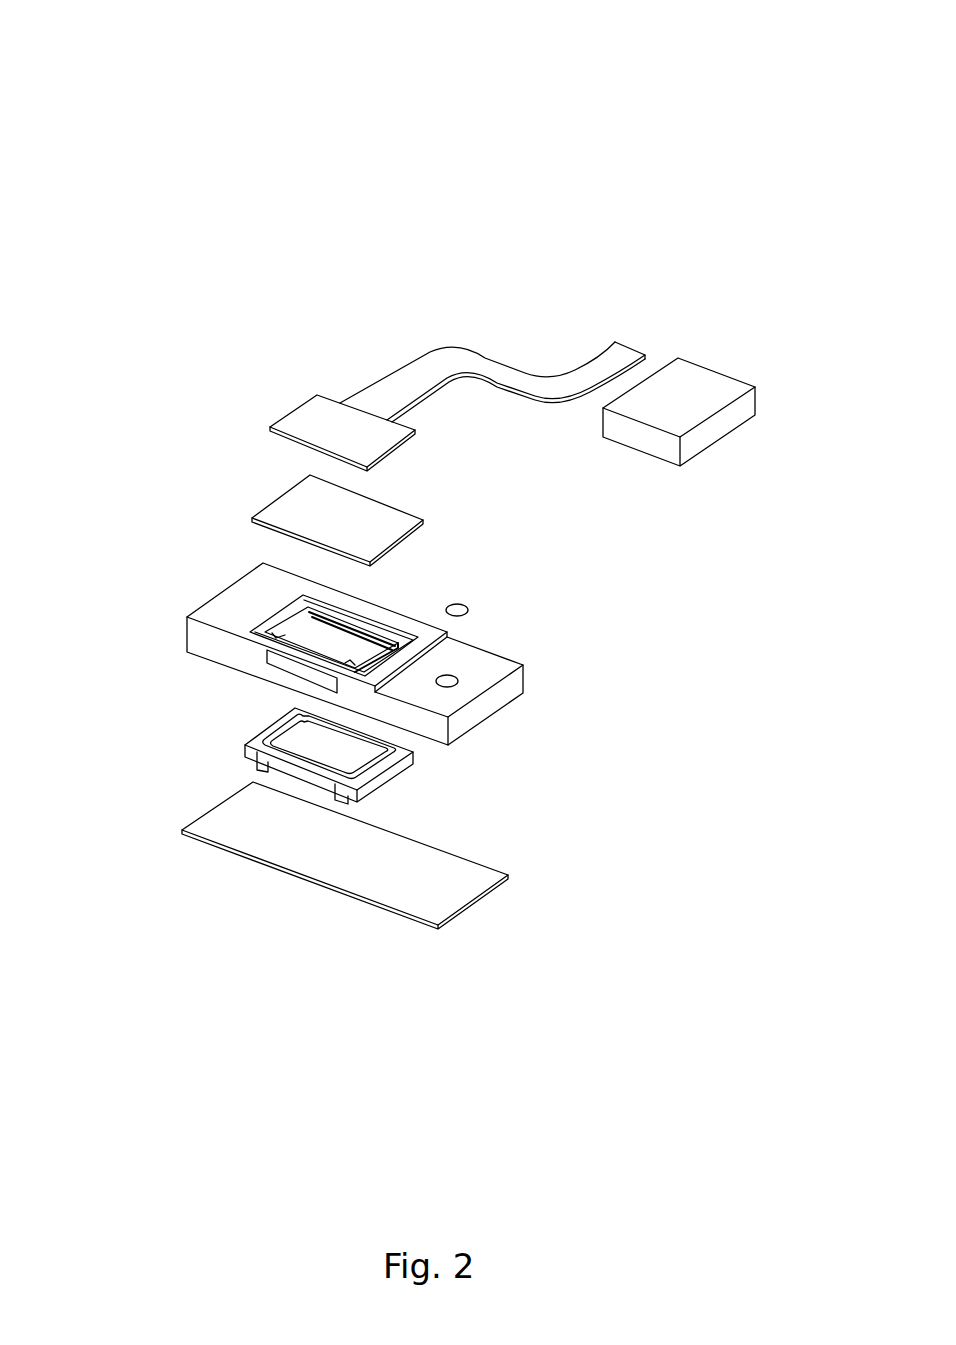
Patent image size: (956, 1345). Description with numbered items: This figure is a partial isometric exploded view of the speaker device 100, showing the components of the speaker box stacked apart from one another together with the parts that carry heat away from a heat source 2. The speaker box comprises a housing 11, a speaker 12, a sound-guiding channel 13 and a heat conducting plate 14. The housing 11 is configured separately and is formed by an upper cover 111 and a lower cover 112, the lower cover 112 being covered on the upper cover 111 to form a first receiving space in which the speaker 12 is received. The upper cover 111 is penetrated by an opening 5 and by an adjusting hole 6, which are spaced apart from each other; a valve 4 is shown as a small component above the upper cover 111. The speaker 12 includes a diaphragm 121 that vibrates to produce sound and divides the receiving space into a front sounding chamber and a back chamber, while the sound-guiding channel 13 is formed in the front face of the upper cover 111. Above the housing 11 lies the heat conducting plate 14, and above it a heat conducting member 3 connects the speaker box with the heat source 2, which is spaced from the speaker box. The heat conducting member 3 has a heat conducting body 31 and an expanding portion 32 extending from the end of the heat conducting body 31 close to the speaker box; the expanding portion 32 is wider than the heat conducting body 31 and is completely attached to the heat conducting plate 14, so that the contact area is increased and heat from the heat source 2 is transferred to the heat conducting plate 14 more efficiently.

The speaker device 100 is at (497, 42).
The heat conducting member 3 is at (505, 283).
The heat conducting body 31 is at (495, 367).
The expanding portion 32 is at (343, 427).
The heat source 2 is at (693, 387).
The heat conducting plate 14 is at (387, 515).
The housing 11 is at (613, 742).
The upper cover 111 is at (470, 718).
The lower cover 112 is at (432, 865).
The opening 5 is at (340, 638).
The valve 4 is at (462, 609).
The adjusting hole 6 is at (473, 672).
The sound-guiding channel 13 is at (283, 672).
The speaker 12 is at (257, 752).
The diaphragm 121 is at (268, 737).